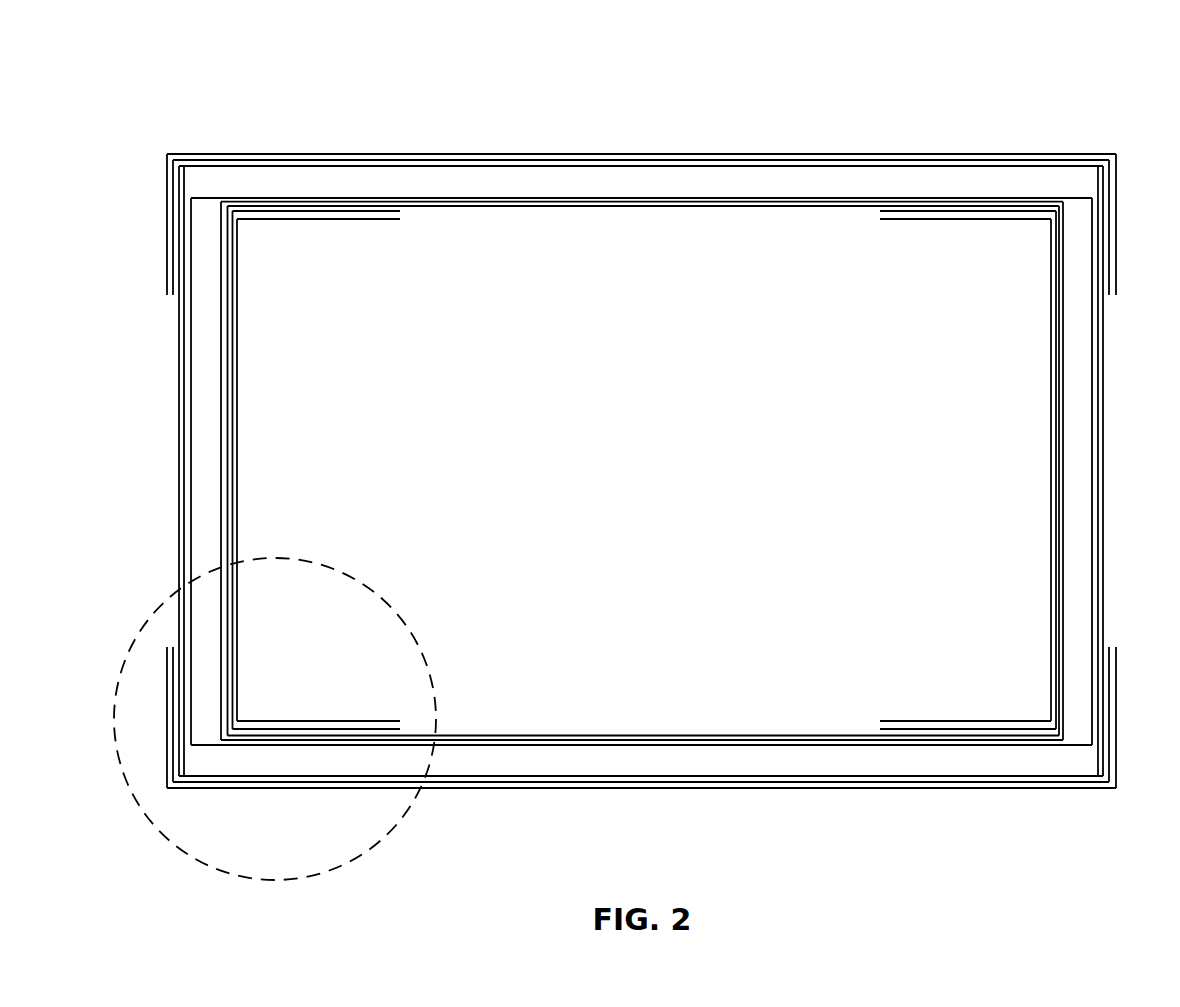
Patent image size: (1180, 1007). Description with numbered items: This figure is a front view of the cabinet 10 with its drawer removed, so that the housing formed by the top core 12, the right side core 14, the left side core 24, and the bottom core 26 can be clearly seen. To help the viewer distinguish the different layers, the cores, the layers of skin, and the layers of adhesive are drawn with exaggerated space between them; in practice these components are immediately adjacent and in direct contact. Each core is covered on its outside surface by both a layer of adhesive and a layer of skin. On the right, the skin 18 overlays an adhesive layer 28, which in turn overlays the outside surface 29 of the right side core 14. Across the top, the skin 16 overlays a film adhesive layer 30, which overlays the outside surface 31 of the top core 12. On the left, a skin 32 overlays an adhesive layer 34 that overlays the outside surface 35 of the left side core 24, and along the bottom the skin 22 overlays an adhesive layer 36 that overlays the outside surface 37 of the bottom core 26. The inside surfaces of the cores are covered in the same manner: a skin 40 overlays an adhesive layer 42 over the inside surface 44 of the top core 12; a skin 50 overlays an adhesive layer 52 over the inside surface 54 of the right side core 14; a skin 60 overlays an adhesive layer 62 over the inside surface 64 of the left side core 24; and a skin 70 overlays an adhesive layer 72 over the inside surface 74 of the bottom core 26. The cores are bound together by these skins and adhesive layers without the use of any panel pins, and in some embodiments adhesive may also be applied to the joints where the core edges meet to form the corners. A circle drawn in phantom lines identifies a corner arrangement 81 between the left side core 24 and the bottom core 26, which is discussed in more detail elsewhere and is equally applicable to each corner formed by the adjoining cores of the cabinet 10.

The cabinet 10 is at (133, 78).
The top core 12 is at (647, 181).
The right side core 14 is at (1082, 458).
The skin 16 is at (718, 155).
The skin 18 is at (1107, 353).
The skin 22 is at (757, 787).
The left side core 24 is at (198, 436).
The bottom core 26 is at (662, 766).
The adhesive layer 28 is at (1100, 388).
The outside surface of right side core 29 is at (1093, 423).
The film adhesive layer 30 is at (770, 160).
The outside surface of top core 31 is at (822, 166).
The skin 32 is at (178, 458).
The adhesive layer 34 is at (184, 495).
The outside surface of left side core 35 is at (190, 532).
The adhesive layer 36 is at (813, 781).
The outside surface of bottom core 37 is at (868, 776).
The skin 40 is at (484, 212).
The adhesive layer 42 is at (537, 207).
The inside surface of top core 44 is at (590, 202).
The skin 50 is at (1050, 410).
The adhesive layer 52 is at (1056, 447).
The inside surface of right side core 54 is at (1062, 485).
The skin 60 is at (233, 370).
The adhesive layer 62 is at (228, 405).
The inside surface of left side core 64 is at (222, 440).
The skin 70 is at (520, 729).
The adhesive layer 72 is at (565, 735).
The inside surface of bottom core 74 is at (610, 741).
The corner arrangement 81 is at (158, 835).